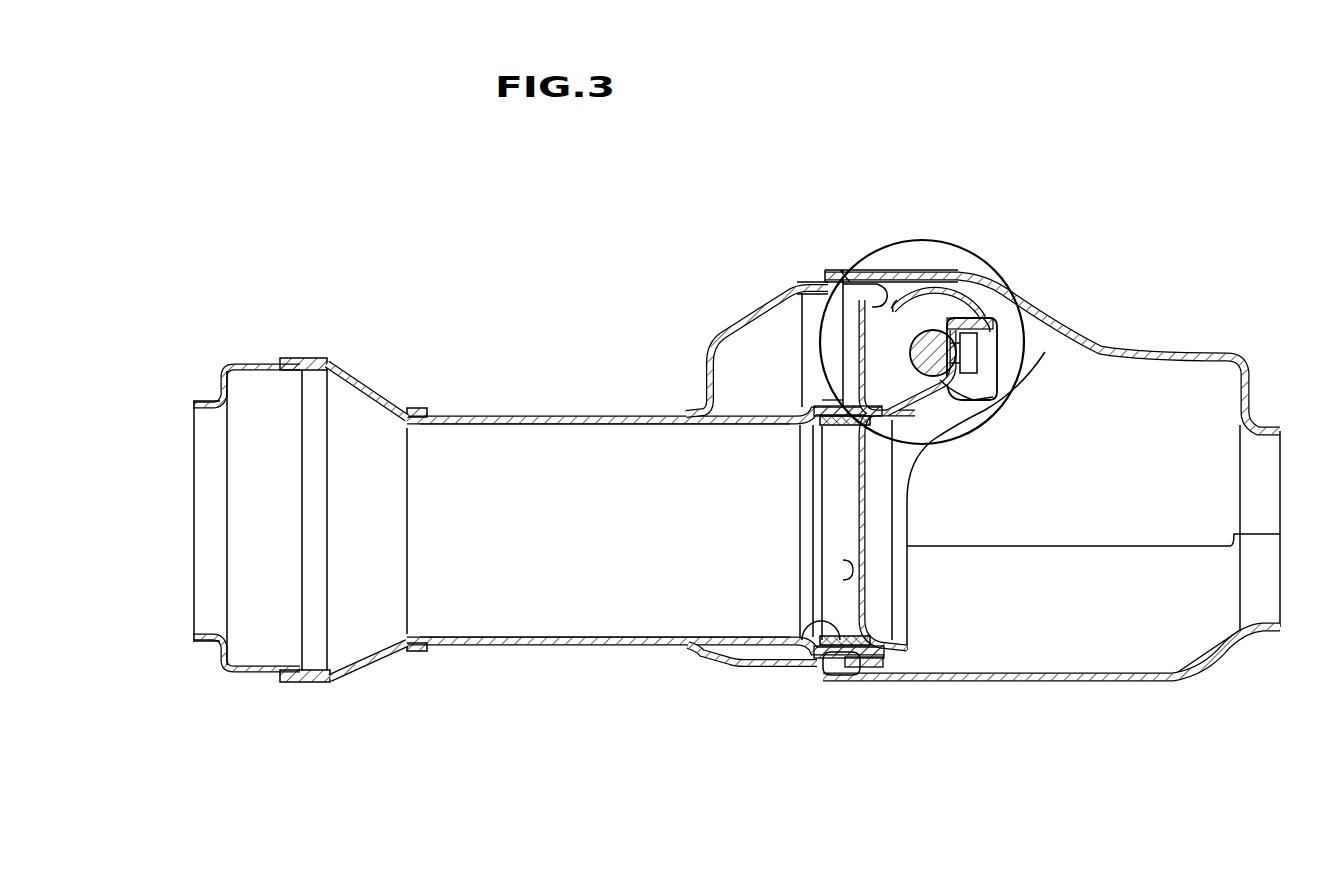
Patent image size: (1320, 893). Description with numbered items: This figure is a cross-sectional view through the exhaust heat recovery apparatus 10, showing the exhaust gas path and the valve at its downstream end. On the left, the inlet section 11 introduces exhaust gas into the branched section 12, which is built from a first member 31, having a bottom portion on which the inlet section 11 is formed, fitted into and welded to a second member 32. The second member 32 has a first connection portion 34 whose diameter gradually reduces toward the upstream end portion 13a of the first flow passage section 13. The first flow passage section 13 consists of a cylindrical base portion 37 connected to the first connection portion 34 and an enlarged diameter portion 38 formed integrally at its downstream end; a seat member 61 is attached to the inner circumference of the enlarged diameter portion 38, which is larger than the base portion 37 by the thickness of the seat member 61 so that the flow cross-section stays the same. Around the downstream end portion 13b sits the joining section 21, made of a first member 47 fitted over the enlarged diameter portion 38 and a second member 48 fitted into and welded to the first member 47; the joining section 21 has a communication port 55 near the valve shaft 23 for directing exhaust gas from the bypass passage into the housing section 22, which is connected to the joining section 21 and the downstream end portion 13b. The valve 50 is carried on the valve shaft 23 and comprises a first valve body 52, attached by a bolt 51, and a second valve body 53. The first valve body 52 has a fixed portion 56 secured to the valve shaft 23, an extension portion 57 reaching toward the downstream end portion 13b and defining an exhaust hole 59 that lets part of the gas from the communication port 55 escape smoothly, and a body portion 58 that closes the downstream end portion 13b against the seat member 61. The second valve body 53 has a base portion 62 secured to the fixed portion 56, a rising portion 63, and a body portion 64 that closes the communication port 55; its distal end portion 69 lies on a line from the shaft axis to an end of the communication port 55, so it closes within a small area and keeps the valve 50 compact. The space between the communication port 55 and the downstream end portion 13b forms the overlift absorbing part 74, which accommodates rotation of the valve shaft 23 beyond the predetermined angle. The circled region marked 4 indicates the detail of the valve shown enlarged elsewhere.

The exhaust heat recovery apparatus 10 is at (711, 441).
The inlet section 11 is at (200, 642).
The branched section 12 is at (287, 504).
The first flow passage section 13 is at (540, 416).
The upstream end portion of the first flow passage section 13a is at (392, 400).
The downstream end portion of the first flow passage section 13b is at (878, 663).
The joining section 21 is at (800, 270).
The housing section 22 is at (1180, 345).
The valve shaft 23 is at (923, 330).
The first member 31 is at (315, 684).
The second member 32 is at (262, 674).
The first connection portion 34 is at (362, 668).
The cylindrical base portion 37 is at (480, 416).
The enlarged diameter portion 38 is at (823, 403).
The first member 47 is at (873, 680).
The second member 48 is at (782, 666).
The valve 50 is at (932, 628).
The bolt 51 is at (995, 326).
The first valve body 52 is at (912, 510).
The second valve body 53 is at (973, 282).
The communication port 55 is at (862, 300).
The fixed portion 56 is at (985, 323).
The extension portion 57 is at (940, 405).
The body portion 58 is at (865, 585).
The exhaust hole 59 is at (995, 401).
The seat member 61 is at (810, 668).
The base portion 62 is at (982, 314).
The rising portion 63 is at (962, 293).
The body portion 64 is at (927, 292).
The distal end portion 69 is at (847, 284).
The overlift absorbing part 74 is at (820, 427).
The detail region 4 is at (953, 242).